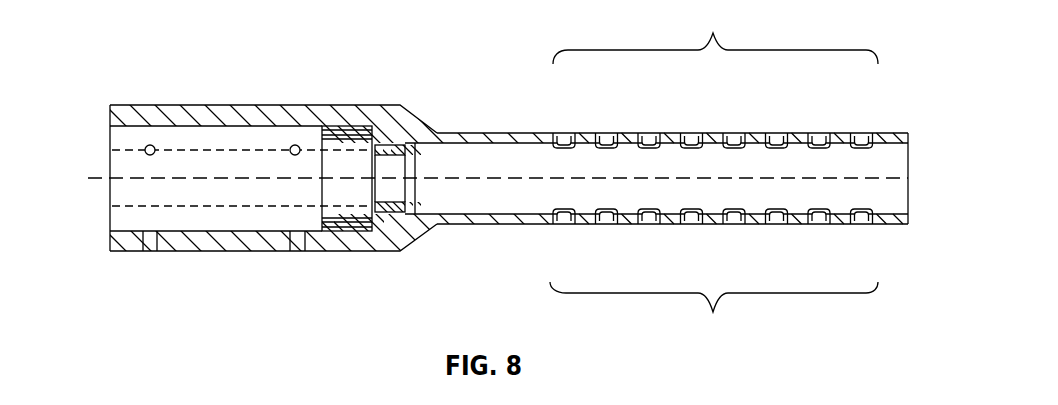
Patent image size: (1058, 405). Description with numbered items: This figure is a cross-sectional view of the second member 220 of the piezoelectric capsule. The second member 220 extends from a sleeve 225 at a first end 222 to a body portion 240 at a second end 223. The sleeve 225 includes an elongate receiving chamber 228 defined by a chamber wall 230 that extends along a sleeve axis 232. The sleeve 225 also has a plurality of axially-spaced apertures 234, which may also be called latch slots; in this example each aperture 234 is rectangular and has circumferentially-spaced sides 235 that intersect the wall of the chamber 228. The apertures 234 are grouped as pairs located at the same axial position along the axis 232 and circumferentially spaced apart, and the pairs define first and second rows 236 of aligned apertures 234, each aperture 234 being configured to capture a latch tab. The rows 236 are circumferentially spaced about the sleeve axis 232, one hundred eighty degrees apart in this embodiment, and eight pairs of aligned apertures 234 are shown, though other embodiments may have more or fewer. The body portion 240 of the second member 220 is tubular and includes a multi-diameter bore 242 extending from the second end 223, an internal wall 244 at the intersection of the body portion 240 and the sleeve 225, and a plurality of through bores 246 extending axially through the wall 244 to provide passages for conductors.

The second member 220 is at (465, 133).
The first end 222 is at (908, 224).
The second end 223 is at (122, 251).
The sleeve 225 is at (507, 133).
The receiving chamber 228 is at (897, 153).
The chamber wall 230 is at (507, 225).
The sleeve axis 232 is at (110, 178).
The apertures 234 is at (606, 133).
The circumferentially-spaced sides 235 is at (650, 133).
The first and second rows 236 is at (714, 174).
The body portion 240 is at (220, 105).
The multi-diameter bore 242 is at (125, 138).
The internal wall 244 is at (384, 237).
The through bores 246 is at (394, 145).